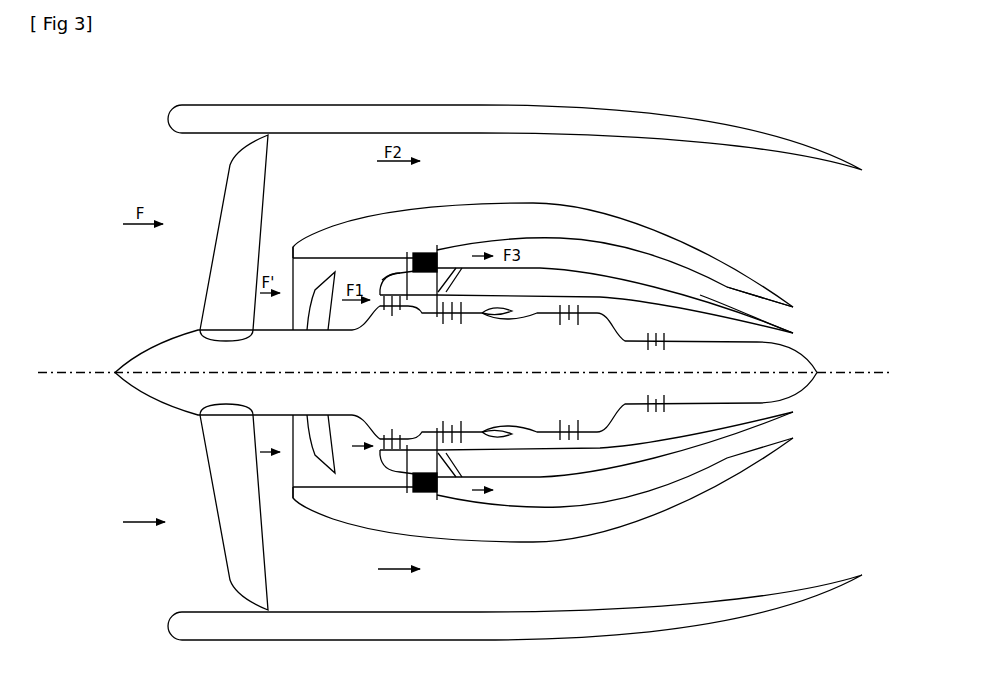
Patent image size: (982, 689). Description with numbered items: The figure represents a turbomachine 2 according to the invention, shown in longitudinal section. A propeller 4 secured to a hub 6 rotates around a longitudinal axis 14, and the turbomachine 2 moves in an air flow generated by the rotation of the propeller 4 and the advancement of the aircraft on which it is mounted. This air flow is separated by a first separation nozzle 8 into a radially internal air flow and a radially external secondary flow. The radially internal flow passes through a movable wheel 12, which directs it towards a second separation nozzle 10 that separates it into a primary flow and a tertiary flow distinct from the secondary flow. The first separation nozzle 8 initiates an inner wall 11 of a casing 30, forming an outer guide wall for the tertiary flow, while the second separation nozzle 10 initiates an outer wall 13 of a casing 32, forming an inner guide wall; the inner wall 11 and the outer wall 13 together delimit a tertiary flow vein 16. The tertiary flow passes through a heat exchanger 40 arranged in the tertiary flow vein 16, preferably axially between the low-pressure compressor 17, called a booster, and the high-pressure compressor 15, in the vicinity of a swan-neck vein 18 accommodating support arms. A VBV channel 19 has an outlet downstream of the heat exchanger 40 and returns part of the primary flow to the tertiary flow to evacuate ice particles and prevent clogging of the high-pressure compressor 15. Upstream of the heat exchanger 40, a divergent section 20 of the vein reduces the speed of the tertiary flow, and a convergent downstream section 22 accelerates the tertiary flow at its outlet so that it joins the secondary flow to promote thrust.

The turbomachine 2 is at (88, 117).
The propeller 4 is at (229, 246).
The hub 6 is at (168, 367).
The first separation nozzle 8 is at (295, 245).
The second separation nozzle 10 is at (377, 284).
The inner wall 11 is at (292, 257).
The movable wheel 12 is at (309, 314).
The outer wall 13 is at (390, 273).
The longitudinal axis 14 is at (77, 370).
The high-pressure compressor 15 is at (465, 323).
The tertiary flow vein 16 is at (576, 264).
The low-pressure compressor 17 is at (388, 323).
The swan-neck vein 18 is at (418, 313).
The VBV channel 19 is at (457, 282).
The divergent section 20 is at (398, 265).
The downstream section 22 is at (763, 308).
The casing 30 is at (486, 231).
The casing 32 is at (534, 294).
The heat exchanger 40 is at (427, 250).